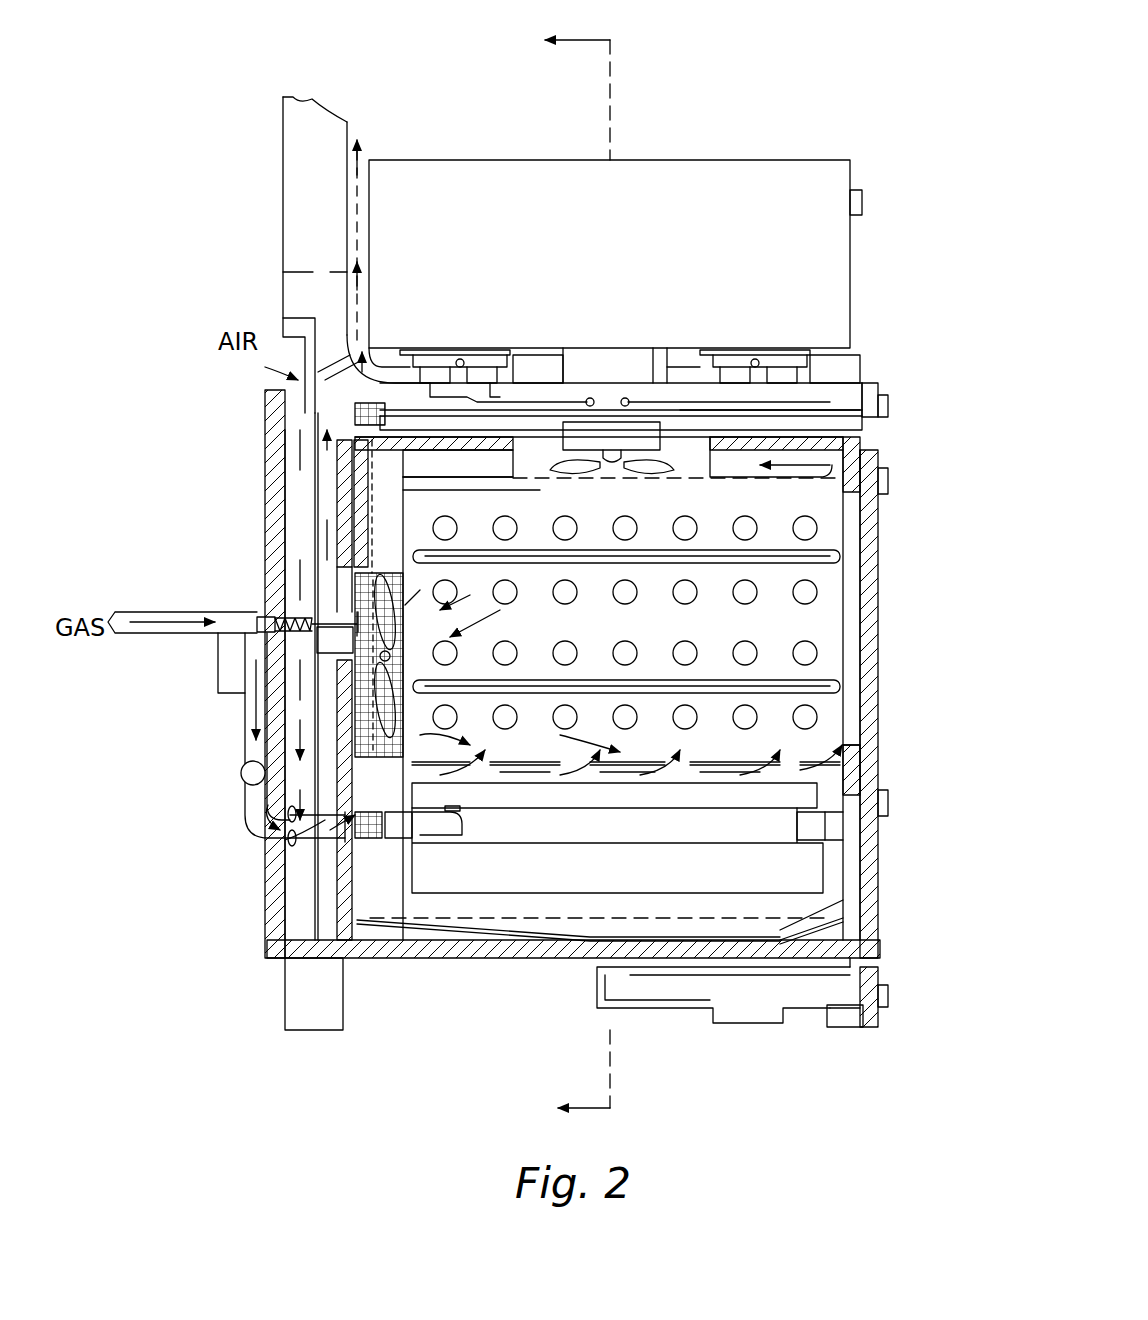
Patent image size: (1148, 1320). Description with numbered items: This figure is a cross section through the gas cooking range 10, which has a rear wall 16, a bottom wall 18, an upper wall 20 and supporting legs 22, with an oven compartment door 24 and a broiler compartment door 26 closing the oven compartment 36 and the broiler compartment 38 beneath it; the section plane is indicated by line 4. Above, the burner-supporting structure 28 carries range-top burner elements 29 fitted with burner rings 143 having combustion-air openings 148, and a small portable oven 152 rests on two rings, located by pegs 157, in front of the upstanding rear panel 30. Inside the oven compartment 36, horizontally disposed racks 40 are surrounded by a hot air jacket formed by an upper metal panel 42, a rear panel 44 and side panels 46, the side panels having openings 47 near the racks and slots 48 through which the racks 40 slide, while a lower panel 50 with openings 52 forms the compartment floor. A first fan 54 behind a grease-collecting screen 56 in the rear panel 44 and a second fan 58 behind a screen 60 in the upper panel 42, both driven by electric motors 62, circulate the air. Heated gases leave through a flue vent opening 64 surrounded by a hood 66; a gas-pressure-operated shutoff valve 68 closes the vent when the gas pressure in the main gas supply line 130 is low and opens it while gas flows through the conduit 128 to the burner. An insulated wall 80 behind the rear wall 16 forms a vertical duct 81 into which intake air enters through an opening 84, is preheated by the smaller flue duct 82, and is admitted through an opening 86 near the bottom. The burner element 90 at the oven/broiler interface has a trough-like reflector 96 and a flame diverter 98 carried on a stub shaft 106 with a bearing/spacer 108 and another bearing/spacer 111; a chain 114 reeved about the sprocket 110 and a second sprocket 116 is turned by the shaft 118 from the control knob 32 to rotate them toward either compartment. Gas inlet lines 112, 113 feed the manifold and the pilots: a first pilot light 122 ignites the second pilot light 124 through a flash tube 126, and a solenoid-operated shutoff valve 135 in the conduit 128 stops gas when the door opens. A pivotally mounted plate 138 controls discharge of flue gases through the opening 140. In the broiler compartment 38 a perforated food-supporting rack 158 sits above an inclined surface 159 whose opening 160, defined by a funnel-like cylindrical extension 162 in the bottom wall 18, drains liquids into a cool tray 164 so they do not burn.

The section line 4- 4 is at (559, 572).
The gas cooking range 10 is at (432, 120).
The rear wall 16 is at (390, 480).
The bottom wall 18 is at (425, 958).
The upper wall 20 is at (765, 448).
The supporting legs 22 is at (300, 987).
The oven compartment door 24 is at (878, 642).
The broiler compartment door 26 is at (870, 900).
The burner-supporting structure 28 is at (862, 380).
The range-top burner elements 29 is at (540, 358).
The upstanding rear panel 30 is at (300, 290).
The oven/broiler control knob 32 is at (880, 404).
The oven compartment 36 is at (822, 592).
The broiler compartment 38 is at (855, 905).
The racks 40 is at (705, 550).
The upper metal panel 42 is at (470, 482).
The rear panel 44 is at (400, 515).
The side panels 46 is at (625, 622).
The openings 47 is at (625, 604).
The slots 48 is at (625, 566).
The lower panel 50 is at (610, 770).
The openings 52 is at (715, 770).
The first fan 54 is at (418, 600).
The grease-collecting screen 56 is at (420, 652).
The second fan 58 is at (568, 470).
The grease-collecting screen 60 is at (655, 478).
The electric motors 62 is at (222, 670).
The flue vent opening 64 is at (330, 640).
The hood 66 is at (370, 640).
The gas-pressure-operated shutoff valve 68 is at (268, 612).
The insulated wall 80 is at (242, 659).
The duct 81 is at (290, 470).
The duct 82 is at (325, 545).
The opening 84 is at (262, 394).
The opening 86 is at (320, 868).
The burner element 90 is at (835, 780).
The reflector 96 is at (800, 870).
The flame diverter 98 is at (785, 783).
The stub shaft 106 is at (362, 840).
The bearing/spacer 108 is at (820, 838).
The sprocket 110 is at (358, 858).
The bearing/spacer 111 is at (398, 846).
The gas inlet line 112 is at (290, 832).
The gas inlet line 113 is at (290, 816).
The chain 114 is at (372, 828).
The sprocket 116 is at (432, 398).
The shaft 118 is at (770, 410).
The first pilot light 122 is at (420, 820).
The second pilot light 124 is at (465, 820).
The flash tube 126 is at (460, 806).
The conduit 128 is at (245, 745).
The main gas supply line 130 is at (150, 636).
The solenoid-operated shutoff valve 135 is at (240, 772).
The pivotally mounted plate 138 is at (330, 385).
The opening 140 is at (340, 360).
The range-top burner rings 143 is at (483, 350).
The openings 148 is at (455, 358).
The portable oven 152 is at (690, 148).
The pegs 157 is at (565, 368).
The perforated food-supporting rack 158 is at (540, 928).
The inclined surface 159 is at (605, 930).
The opening 160 is at (740, 940).
The funnel-like cylindrical extension 162 is at (785, 962).
The tray 164 is at (690, 1000).